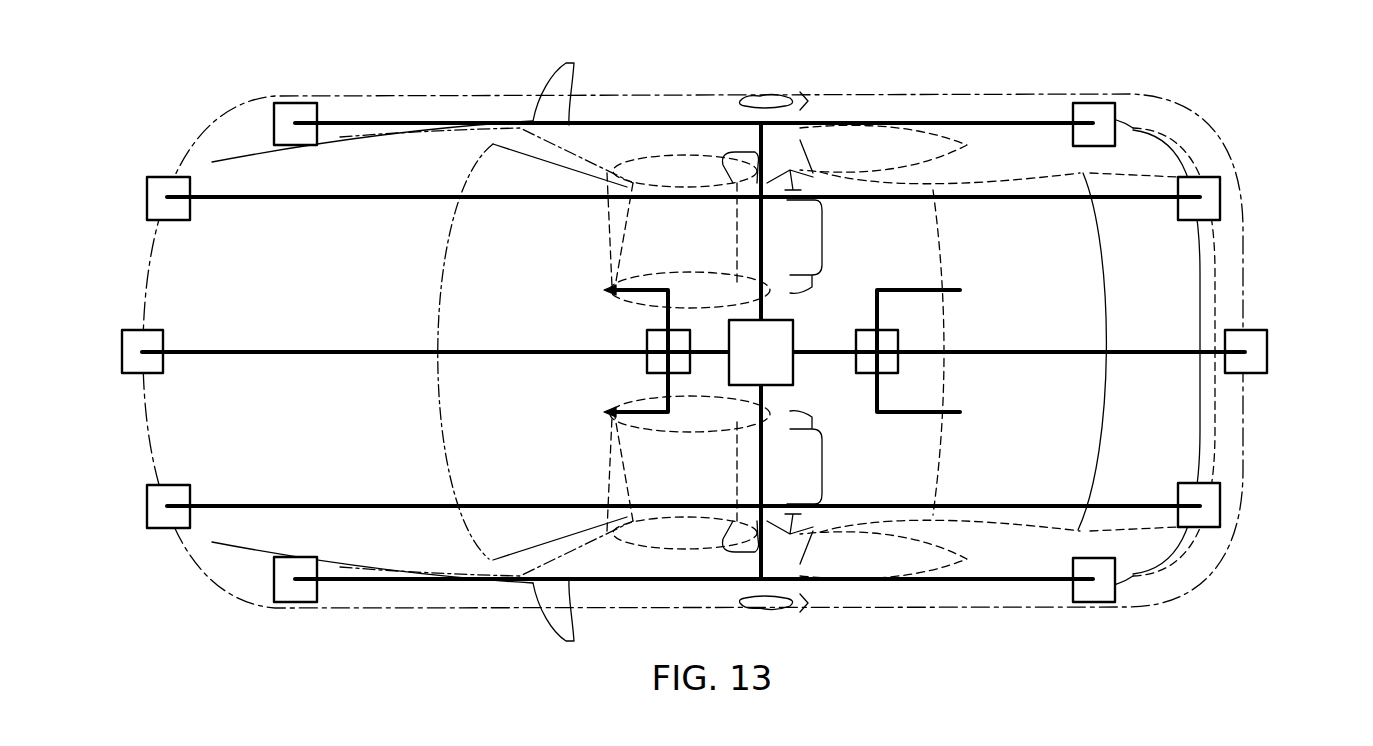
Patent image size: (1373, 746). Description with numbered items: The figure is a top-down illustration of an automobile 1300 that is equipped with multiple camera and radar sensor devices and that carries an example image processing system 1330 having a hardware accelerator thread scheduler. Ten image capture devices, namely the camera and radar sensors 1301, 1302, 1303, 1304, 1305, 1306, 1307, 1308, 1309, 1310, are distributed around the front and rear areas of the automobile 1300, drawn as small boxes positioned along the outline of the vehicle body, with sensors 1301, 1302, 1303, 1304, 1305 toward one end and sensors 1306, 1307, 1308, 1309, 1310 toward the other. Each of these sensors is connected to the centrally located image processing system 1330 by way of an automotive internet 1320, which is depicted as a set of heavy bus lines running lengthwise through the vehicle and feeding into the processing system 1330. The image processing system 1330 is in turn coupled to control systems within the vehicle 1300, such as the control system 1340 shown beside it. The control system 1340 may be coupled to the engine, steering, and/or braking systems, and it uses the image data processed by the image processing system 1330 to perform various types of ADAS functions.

The automobile 1300 is at (683, 95).
The camera and radar sensor device 1301 is at (295, 103).
The camera and radar sensor device 1302 is at (147, 190).
The camera and radar sensor device 1303 is at (122, 345).
The camera and radar sensor device 1304 is at (147, 515).
The camera and radar sensor device 1305 is at (295, 602).
The camera and radar sensor device 1306 is at (1100, 602).
The camera and radar sensor device 1307 is at (1220, 515).
The camera and radar sensor device 1308 is at (1267, 345).
The camera and radar sensor device 1309 is at (1220, 187).
The camera and radar sensor device 1310 is at (1100, 103).
The automotive internet 1320 is at (542, 350).
The image processing system 1330 is at (788, 364).
The control system 1340 is at (900, 340).